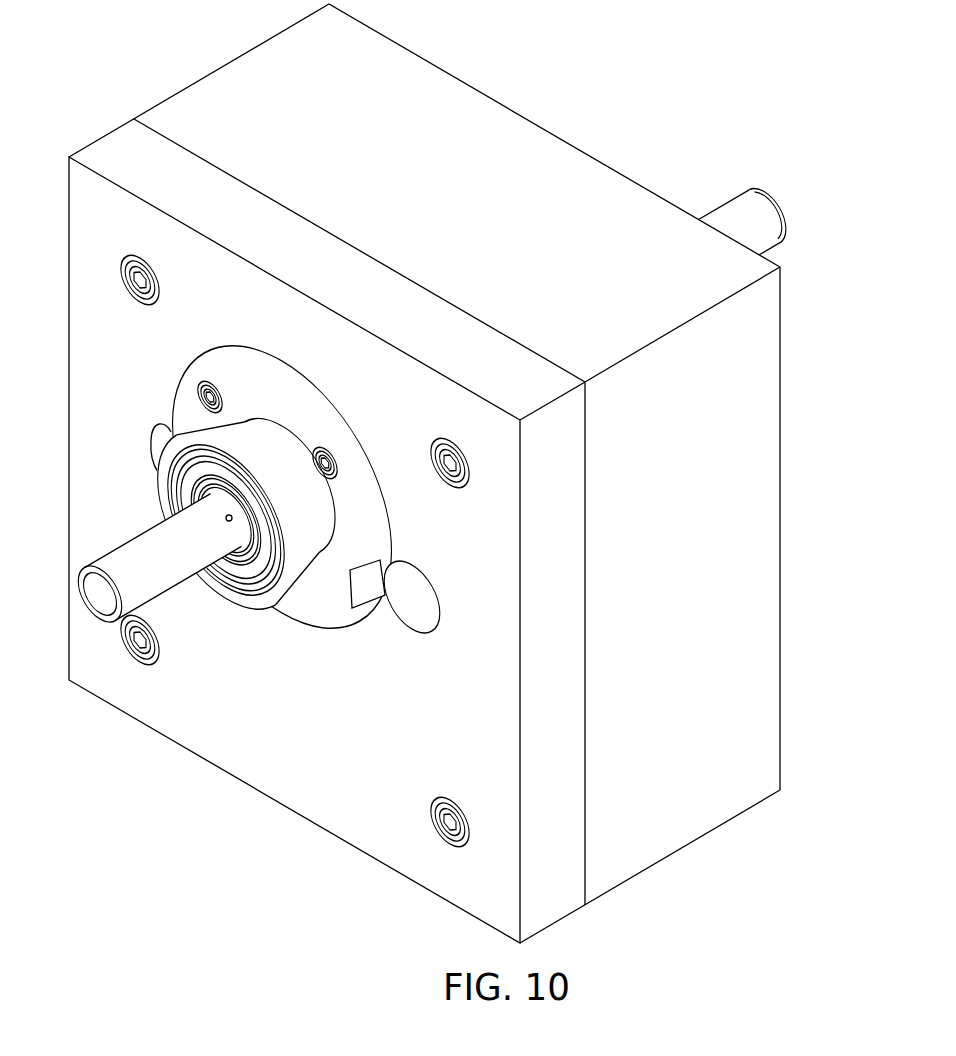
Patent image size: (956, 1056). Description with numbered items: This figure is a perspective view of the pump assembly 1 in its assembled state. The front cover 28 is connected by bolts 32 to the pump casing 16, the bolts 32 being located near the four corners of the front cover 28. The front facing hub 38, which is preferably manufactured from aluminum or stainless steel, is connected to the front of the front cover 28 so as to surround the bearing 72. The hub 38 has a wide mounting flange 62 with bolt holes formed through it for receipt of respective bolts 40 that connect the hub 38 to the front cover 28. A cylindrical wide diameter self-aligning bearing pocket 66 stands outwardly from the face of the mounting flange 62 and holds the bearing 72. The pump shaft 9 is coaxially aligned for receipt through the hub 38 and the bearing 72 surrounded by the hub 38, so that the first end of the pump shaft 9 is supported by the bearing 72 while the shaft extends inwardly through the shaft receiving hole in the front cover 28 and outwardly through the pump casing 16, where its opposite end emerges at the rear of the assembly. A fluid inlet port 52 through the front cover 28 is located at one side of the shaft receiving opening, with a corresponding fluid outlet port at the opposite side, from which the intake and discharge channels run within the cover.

The pump assembly 1 is at (457, 473).
The pump shaft 9 is at (95, 596).
The pump casing 16 is at (767, 477).
The front cover 28 is at (570, 693).
The bolts 32 is at (146, 262).
The front facing hub 38 is at (258, 342).
The bolts 40 is at (205, 388).
The fluid inlet port 52 is at (152, 443).
The mounting flange 62 is at (317, 385).
The self-aligning bearing pocket 66 is at (297, 575).
The bearing 72 is at (240, 584).